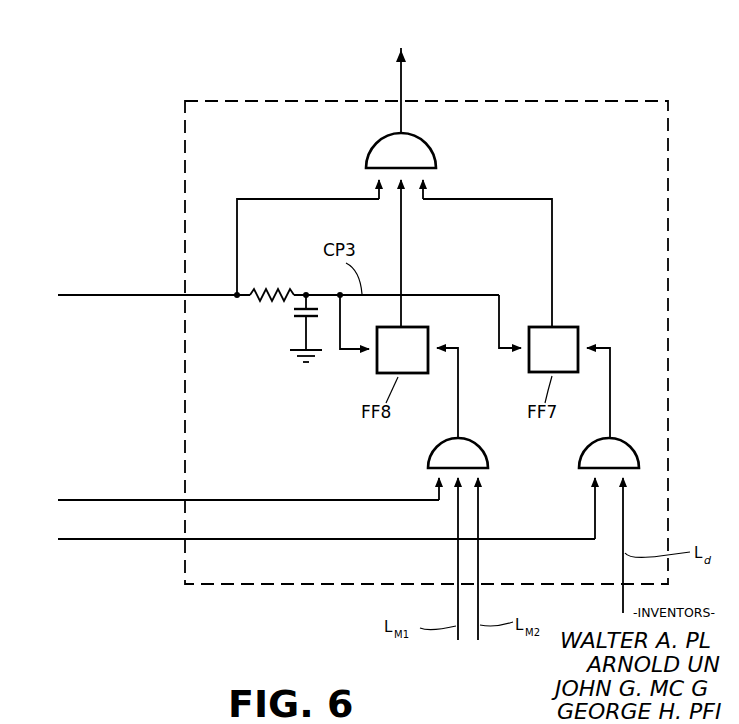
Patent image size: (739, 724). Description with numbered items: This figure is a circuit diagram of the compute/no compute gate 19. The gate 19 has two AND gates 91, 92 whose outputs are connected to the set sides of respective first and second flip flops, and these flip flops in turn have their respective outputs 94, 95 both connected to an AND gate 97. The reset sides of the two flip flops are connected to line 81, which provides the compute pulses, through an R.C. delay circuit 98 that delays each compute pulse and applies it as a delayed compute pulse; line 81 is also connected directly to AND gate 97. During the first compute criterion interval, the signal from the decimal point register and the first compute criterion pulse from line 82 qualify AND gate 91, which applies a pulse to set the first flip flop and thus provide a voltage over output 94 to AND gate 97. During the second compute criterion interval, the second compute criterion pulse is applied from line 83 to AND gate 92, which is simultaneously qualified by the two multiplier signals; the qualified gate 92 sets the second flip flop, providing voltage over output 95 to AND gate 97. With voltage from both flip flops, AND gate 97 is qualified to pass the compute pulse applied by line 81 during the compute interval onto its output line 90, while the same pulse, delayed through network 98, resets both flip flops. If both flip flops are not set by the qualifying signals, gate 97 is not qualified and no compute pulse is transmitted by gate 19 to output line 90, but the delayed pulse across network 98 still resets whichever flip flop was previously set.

The compute/no compute gate 19 is at (252, 98).
The line 81 is at (117, 295).
The line 82 is at (117, 540).
The line 83 is at (119, 499).
The output line CP1 90 is at (403, 85).
The AND gate 91 is at (633, 448).
The AND gate 92 is at (486, 452).
The output of flip flop FF7 94 is at (554, 243).
The output of flip flop FF8 95 is at (403, 243).
The AND gate 97 is at (437, 158).
The R.C. delay circuit 98 is at (292, 302).